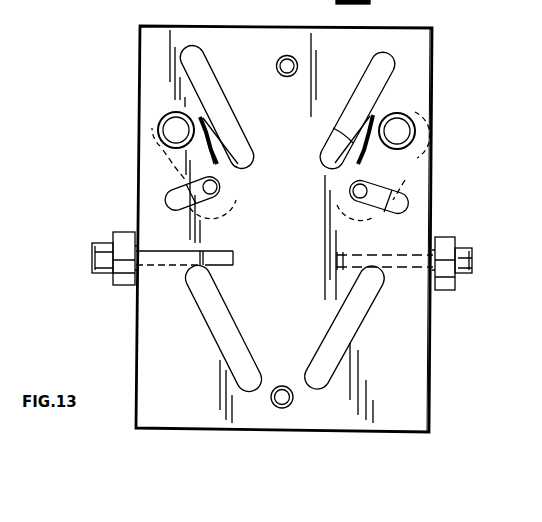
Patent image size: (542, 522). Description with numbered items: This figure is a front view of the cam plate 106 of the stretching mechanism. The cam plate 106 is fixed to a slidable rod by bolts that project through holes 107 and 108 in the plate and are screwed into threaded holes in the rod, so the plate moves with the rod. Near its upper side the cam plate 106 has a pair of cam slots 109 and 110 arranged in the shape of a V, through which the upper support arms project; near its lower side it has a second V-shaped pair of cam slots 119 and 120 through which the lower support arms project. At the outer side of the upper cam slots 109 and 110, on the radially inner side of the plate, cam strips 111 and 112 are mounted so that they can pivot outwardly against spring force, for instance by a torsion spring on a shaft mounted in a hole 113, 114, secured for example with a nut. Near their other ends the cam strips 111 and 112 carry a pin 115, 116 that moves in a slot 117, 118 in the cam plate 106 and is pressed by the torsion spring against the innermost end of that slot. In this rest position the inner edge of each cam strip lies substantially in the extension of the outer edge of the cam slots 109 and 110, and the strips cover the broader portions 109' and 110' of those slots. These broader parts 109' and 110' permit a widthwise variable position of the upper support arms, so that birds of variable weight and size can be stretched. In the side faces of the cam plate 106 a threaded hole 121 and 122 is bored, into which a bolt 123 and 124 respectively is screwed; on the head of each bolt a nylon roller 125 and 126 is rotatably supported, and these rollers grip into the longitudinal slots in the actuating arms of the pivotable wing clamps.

The cam plate 106 is at (150, 305).
The hole 107 is at (287, 52).
The hole 108 is at (275, 408).
The cam slot 109 is at (218, 107).
The broader portion of cam slot 109' is at (246, 140).
The cam slot 110 is at (357, 107).
The broader portion of cam slot 110' is at (328, 142).
The cam strip 111 is at (207, 148).
The cam strip 112 is at (333, 130).
The hole 113 is at (157, 128).
The hole 114 is at (408, 127).
The pin 115 is at (209, 187).
The pin 116 is at (362, 192).
The slot 117 is at (170, 197).
The slot 118 is at (408, 203).
The cam slot 119 is at (208, 330).
The cam slot 120 is at (360, 333).
The threaded hole 121 is at (213, 247).
The threaded hole 122 is at (338, 254).
The bolt 123 is at (102, 252).
The bolt 124 is at (463, 275).
The nylon roller 125 is at (121, 270).
The nylon roller 126 is at (445, 245).